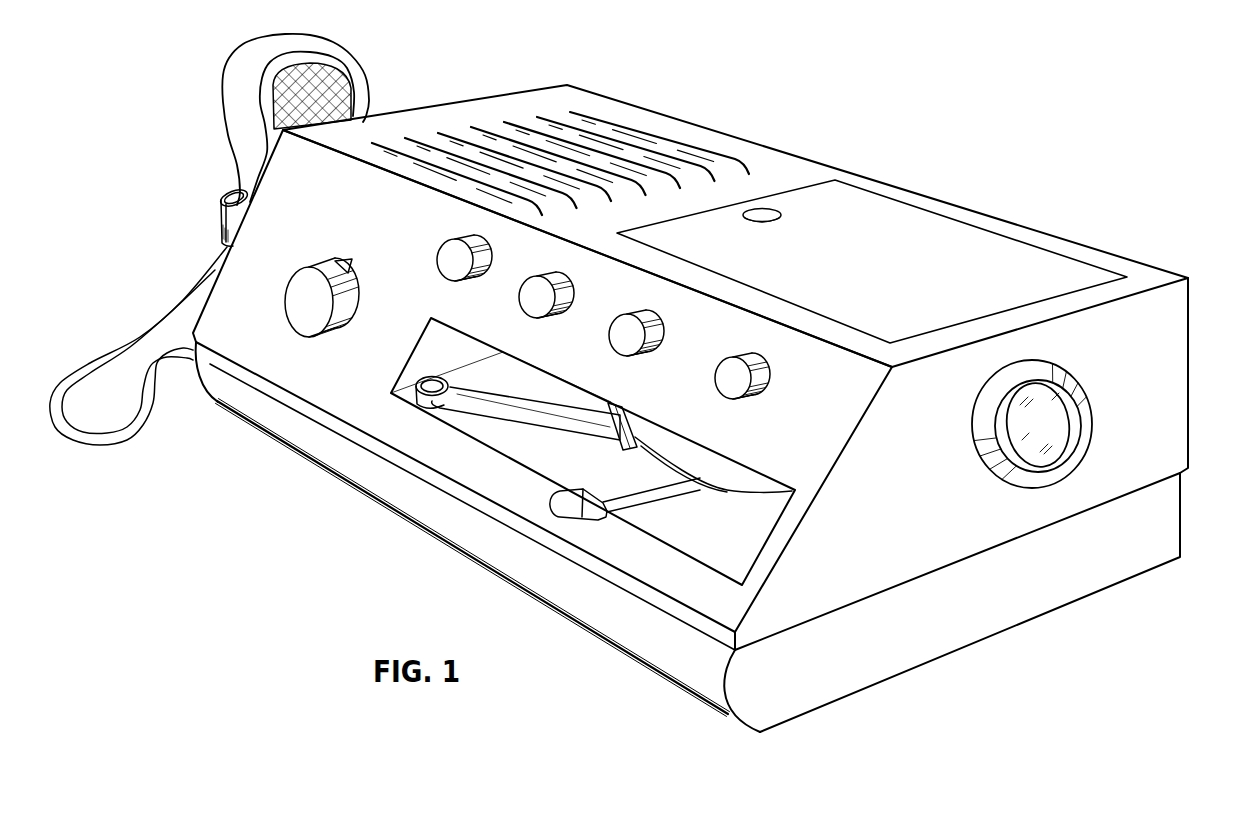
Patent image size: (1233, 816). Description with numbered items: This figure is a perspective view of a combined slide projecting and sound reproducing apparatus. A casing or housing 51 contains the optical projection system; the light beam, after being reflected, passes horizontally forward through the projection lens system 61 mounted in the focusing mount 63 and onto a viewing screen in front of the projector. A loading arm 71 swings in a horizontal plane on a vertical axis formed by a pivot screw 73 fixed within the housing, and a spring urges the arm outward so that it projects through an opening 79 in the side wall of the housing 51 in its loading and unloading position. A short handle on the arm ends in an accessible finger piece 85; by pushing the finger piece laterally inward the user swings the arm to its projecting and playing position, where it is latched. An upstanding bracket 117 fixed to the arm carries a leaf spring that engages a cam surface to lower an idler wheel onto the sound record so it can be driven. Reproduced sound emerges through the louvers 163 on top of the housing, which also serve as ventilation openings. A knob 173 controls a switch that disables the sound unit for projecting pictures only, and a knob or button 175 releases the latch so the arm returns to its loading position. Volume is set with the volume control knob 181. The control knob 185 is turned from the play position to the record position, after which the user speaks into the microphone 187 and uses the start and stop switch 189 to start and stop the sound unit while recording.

The casing or housing 51 is at (1189, 346).
The projection lens system 61 is at (1058, 427).
The focusing mount 63 is at (1055, 377).
The loading arm 71 is at (508, 402).
The pivot screw 73 is at (428, 378).
The opening 79 is at (743, 463).
The finger piece 85 is at (590, 512).
The upstanding bracket 117 is at (628, 427).
The louvers 163 is at (525, 124).
The knob 173 is at (622, 325).
The knob or button 175 is at (723, 370).
The volume control knob 181 is at (533, 292).
The control knob 185 is at (298, 312).
The microphone 187 is at (225, 83).
The start and stop switch 189 is at (446, 252).